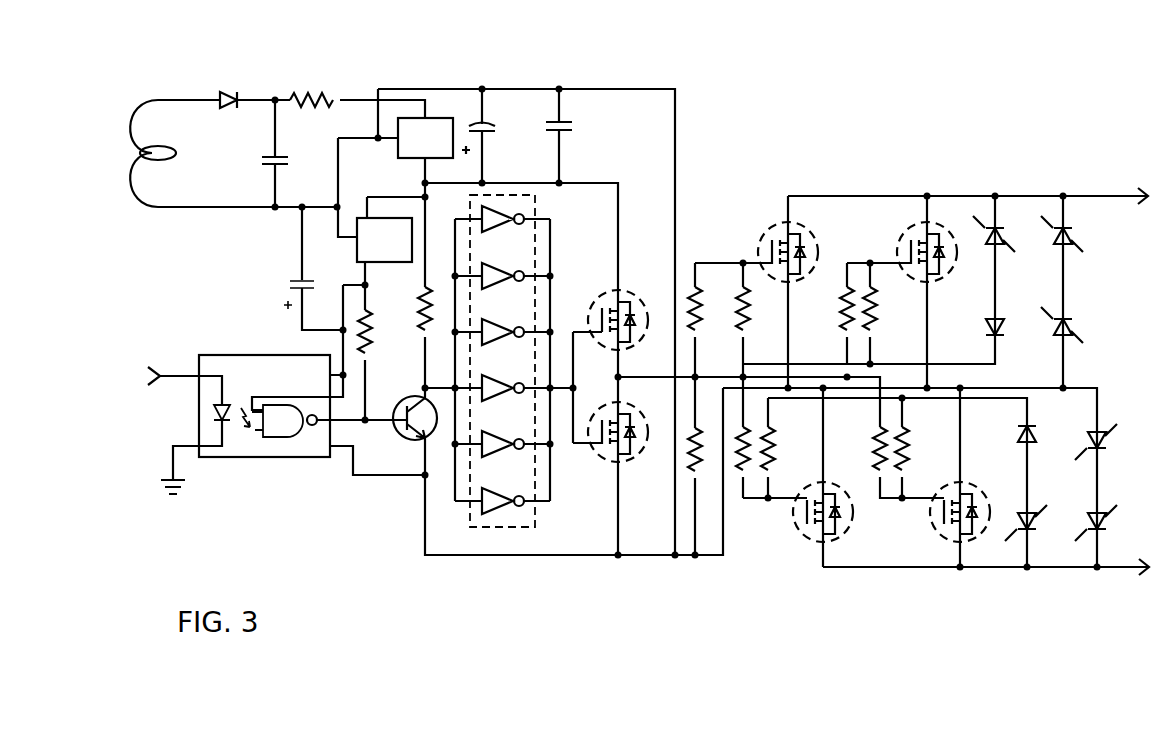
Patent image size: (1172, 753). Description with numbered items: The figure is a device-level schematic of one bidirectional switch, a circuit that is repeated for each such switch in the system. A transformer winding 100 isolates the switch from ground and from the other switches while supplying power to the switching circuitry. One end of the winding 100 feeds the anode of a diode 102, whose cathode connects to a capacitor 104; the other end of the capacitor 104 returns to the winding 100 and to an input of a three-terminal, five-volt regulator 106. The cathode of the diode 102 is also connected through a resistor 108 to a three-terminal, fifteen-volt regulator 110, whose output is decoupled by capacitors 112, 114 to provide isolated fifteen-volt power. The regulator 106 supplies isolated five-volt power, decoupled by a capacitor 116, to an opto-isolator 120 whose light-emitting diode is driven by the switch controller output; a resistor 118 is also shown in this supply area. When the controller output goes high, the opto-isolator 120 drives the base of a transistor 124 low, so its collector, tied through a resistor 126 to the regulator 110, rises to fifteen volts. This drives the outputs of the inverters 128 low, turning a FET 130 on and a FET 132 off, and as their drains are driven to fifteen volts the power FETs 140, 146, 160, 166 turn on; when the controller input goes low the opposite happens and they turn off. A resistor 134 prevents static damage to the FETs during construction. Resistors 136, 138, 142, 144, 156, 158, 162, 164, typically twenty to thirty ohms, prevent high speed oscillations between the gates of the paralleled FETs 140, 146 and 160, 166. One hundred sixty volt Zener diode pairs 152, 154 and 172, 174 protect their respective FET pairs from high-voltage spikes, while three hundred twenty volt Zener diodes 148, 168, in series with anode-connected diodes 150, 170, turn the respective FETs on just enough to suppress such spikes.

The winding 100 is at (131, 150).
The diode 102 is at (232, 93).
The capacitor 104 is at (268, 157).
The three-terminal, five-volt regulator 106 is at (405, 255).
The resistor 108 is at (296, 96).
The three-terminal, fifteen-volt regulator 110 is at (385, 162).
The capacitor 112 is at (486, 125).
The capacitor 114 is at (570, 124).
The capacitor 116 is at (300, 281).
The resistor 118 is at (366, 347).
The opto-isolator 120 is at (281, 383).
The transistor 124 is at (400, 433).
The resistor 126 is at (425, 322).
The inverters 128 is at (536, 263).
The FET 130 is at (646, 302).
The FET 132 is at (629, 422).
The resistor 134 is at (690, 462).
The resistor 136 is at (714, 316).
The resistor 138 is at (744, 316).
The FET 140 is at (818, 246).
The resistor 142 is at (845, 310).
The resistor 144 is at (871, 322).
The FET 146 is at (946, 274).
The Zener diode 148 is at (1005, 245).
The diode 150 is at (1003, 337).
The Zener diode 152 is at (1073, 245).
The Zener diode 154 is at (1073, 337).
The resistor 156 is at (740, 478).
The resistor 158 is at (770, 455).
The FET 160 is at (850, 526).
The resistor 162 is at (876, 450).
The resistor 164 is at (906, 452).
The FET 166 is at (982, 500).
The Zener diode 168 is at (1036, 518).
The diode 170 is at (1036, 437).
The Zener diode 172 is at (1106, 518).
The Zener diode 174 is at (1106, 438).